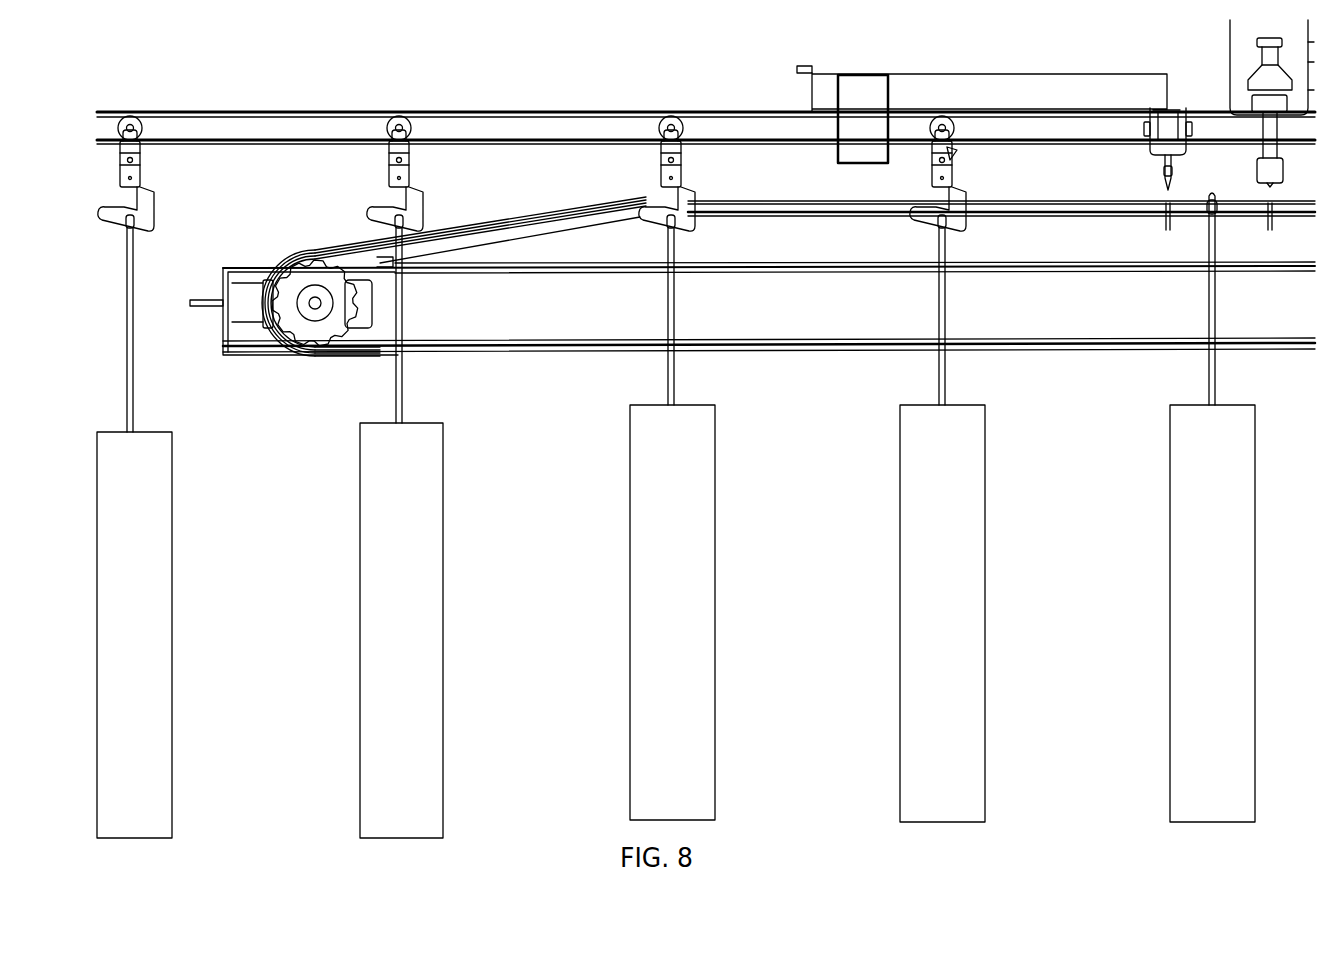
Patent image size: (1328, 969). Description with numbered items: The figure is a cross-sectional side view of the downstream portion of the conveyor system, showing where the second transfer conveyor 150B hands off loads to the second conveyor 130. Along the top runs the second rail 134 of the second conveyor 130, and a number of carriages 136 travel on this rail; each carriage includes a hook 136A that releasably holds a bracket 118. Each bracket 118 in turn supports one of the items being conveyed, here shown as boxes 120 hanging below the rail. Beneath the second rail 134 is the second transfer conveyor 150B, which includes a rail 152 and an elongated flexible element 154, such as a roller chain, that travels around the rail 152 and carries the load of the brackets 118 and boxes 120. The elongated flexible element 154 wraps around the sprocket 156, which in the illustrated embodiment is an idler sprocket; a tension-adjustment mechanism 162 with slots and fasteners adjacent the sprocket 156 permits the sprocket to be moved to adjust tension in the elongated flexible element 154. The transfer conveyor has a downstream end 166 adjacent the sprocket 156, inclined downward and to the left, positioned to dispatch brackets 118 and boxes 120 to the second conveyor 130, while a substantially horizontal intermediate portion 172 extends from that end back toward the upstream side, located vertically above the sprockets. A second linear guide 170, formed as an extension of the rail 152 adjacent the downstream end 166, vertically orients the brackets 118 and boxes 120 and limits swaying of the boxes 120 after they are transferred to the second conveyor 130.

The bracket 118 is at (676, 398).
The boxes 120 is at (638, 604).
The second conveyor 130 is at (579, 85).
The second rail 134 is at (615, 125).
The carriages 136 is at (440, 190).
The hook 136A is at (692, 198).
The second transfer conveyor 150B is at (851, 366).
The rail 152 is at (1045, 327).
The elongated flexible element 154 is at (607, 213).
The sprocket 156 is at (319, 262).
The tension-adjustment mechanism 162 is at (250, 338).
The downstream end 166 is at (508, 210).
The second linear guide 170 is at (254, 244).
The intermediate portion 172 is at (1075, 190).